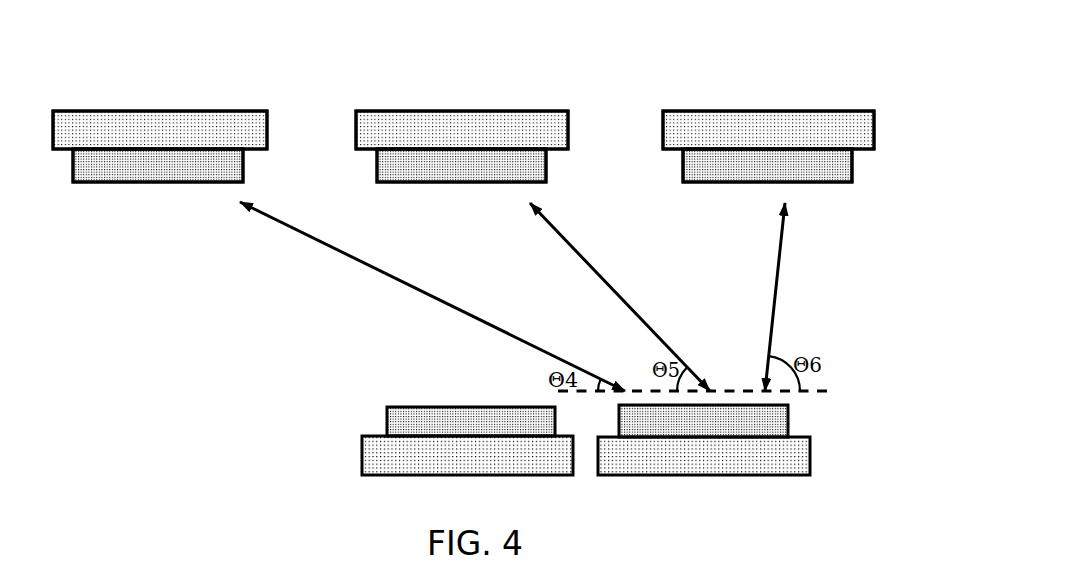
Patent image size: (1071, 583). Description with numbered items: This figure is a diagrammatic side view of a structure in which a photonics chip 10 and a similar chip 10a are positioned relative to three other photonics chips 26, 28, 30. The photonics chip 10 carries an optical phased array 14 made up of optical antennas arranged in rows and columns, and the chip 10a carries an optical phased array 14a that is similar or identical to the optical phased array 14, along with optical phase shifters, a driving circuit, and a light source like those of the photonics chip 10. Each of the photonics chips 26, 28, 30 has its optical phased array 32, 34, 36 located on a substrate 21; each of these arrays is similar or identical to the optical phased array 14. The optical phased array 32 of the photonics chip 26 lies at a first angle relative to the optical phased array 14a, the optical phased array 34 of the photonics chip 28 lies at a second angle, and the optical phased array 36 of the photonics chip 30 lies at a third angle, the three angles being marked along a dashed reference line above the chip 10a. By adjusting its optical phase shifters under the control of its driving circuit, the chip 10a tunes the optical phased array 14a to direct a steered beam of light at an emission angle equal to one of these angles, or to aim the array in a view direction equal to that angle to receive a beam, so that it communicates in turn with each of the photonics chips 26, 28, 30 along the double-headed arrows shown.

The photonics chip 10 is at (362, 455).
The photonics chip 10a is at (811, 452).
The optical phased array 14 is at (386, 420).
The optical phased array 14a is at (752, 422).
The substrate 21 is at (236, 127).
The photonics chip 26 is at (100, 108).
The photonics chip 28 is at (407, 108).
The photonics chip 30 is at (725, 108).
The optical phased array 32 is at (187, 165).
The optical phased array 34 is at (492, 165).
The optical phased array 36 is at (812, 165).